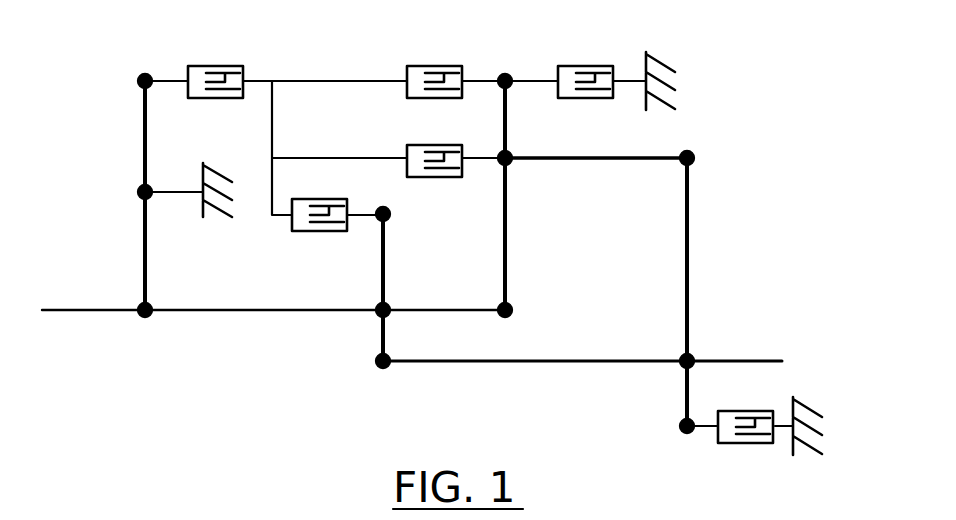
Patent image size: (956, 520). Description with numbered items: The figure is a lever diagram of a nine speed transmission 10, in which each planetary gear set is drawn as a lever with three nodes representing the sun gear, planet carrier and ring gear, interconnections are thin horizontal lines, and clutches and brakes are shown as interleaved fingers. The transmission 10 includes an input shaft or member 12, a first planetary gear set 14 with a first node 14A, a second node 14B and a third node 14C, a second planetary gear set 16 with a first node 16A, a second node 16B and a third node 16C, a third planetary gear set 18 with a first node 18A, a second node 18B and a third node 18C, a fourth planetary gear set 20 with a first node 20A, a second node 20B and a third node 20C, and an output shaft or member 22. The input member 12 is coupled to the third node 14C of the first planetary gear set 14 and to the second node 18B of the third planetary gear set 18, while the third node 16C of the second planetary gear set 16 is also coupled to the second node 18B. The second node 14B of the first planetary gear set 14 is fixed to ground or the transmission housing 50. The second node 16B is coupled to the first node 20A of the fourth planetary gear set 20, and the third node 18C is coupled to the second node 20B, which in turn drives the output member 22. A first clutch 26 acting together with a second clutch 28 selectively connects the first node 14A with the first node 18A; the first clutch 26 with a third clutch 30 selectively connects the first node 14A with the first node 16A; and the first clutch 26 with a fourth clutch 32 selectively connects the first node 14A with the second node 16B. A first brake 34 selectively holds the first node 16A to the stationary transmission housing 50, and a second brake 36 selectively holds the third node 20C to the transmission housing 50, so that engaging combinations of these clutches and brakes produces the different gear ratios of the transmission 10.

The nine speed transmission 10 is at (708, 112).
The input shaft or member 12 is at (120, 312).
The first planetary gear set 14 is at (173, 325).
The first node 14A is at (140, 86).
The second node 14B is at (140, 196).
The third node 14C is at (150, 305).
The second planetary gear set 16 is at (528, 176).
The first node 16A is at (510, 76).
The second node 16B is at (510, 154).
The third node 16C is at (512, 306).
The third planetary gear set 18 is at (355, 325).
The first node 18A is at (390, 213).
The second node 18B is at (390, 306).
The third node 18C is at (390, 358).
The fourth planetary gear set 20 is at (653, 378).
The first node 20A is at (692, 163).
The second node 20B is at (683, 357).
The third node 20C is at (684, 432).
The output shaft or member 22 is at (716, 361).
The first clutch 26 is at (210, 66).
The second clutch 28 is at (320, 231).
The third clutch 30 is at (450, 98).
The fourth clutch 32 is at (410, 147).
The first brake 34 is at (583, 98).
The second brake 36 is at (748, 443).
The transmission housing 50 is at (205, 163).